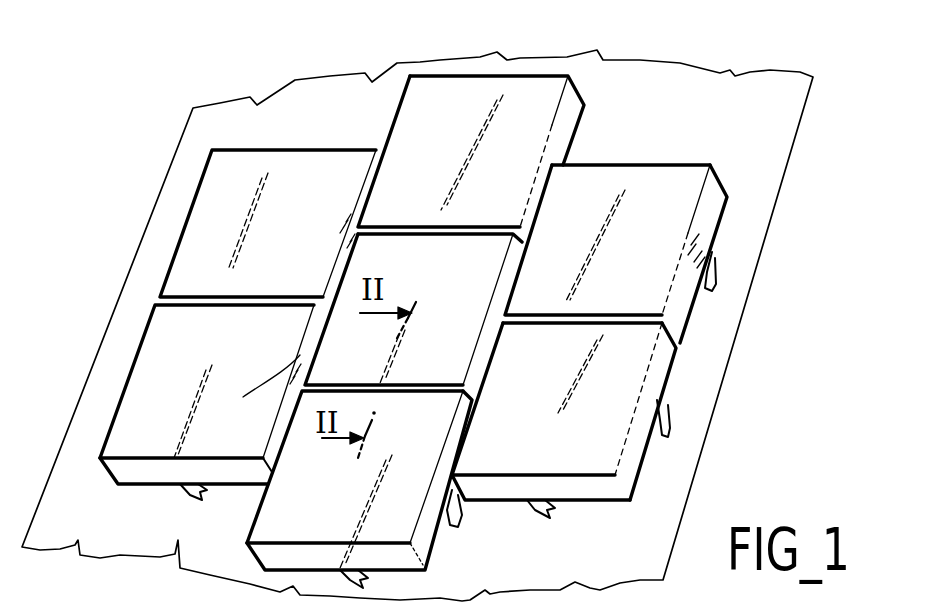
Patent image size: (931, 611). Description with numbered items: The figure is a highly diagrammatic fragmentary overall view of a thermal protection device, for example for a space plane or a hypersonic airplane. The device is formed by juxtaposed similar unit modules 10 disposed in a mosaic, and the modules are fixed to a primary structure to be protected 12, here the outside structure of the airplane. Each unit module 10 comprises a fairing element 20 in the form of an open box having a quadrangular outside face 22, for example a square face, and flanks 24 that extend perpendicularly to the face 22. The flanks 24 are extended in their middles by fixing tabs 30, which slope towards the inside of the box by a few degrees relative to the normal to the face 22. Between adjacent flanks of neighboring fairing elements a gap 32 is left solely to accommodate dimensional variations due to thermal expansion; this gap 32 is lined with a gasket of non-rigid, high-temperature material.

The unit module 10 is at (602, 193).
The primary structure to be protected 12 is at (760, 213).
The fairing element 20 is at (682, 365).
The outside face 22 is at (630, 385).
The flank 24 is at (706, 233).
The fixing tab 30 is at (464, 511).
The gap 32 is at (300, 392).